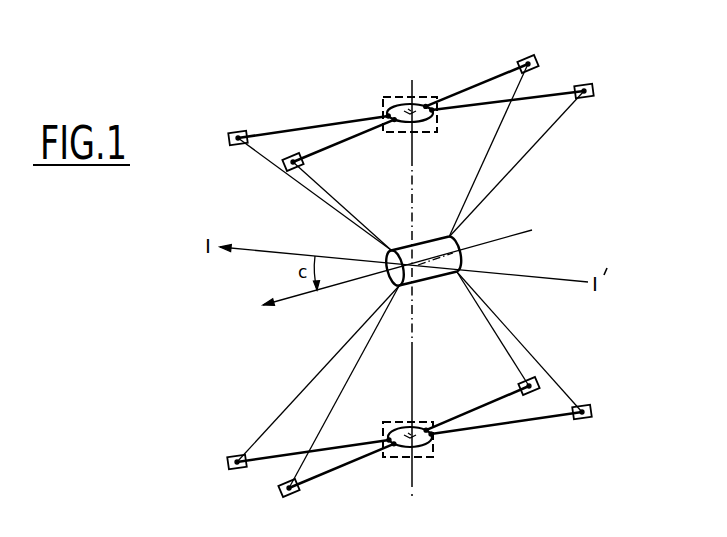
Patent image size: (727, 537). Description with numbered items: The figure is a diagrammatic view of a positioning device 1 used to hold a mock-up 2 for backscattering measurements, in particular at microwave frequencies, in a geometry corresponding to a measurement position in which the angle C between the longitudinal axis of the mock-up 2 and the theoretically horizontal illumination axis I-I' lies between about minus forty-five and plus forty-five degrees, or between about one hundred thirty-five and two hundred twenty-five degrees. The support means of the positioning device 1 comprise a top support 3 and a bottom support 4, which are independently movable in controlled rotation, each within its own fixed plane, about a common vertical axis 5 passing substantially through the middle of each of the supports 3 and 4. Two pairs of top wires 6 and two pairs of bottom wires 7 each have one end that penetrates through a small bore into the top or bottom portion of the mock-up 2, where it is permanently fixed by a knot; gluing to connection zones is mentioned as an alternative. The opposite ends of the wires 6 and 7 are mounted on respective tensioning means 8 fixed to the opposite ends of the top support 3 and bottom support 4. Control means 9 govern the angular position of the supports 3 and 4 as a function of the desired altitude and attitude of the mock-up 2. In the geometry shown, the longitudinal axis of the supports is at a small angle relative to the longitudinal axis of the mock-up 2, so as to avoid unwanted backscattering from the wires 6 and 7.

The positioning device 1 is at (590, 197).
The mock-up 2 is at (423, 250).
The top support 3 is at (458, 77).
The bottom support 4 is at (508, 432).
The common vertical axis 5 is at (413, 367).
The top wires 6 is at (505, 178).
The bottom wires 7 is at (522, 344).
The tensioning means 8 is at (525, 47).
The control means 9 is at (428, 461).